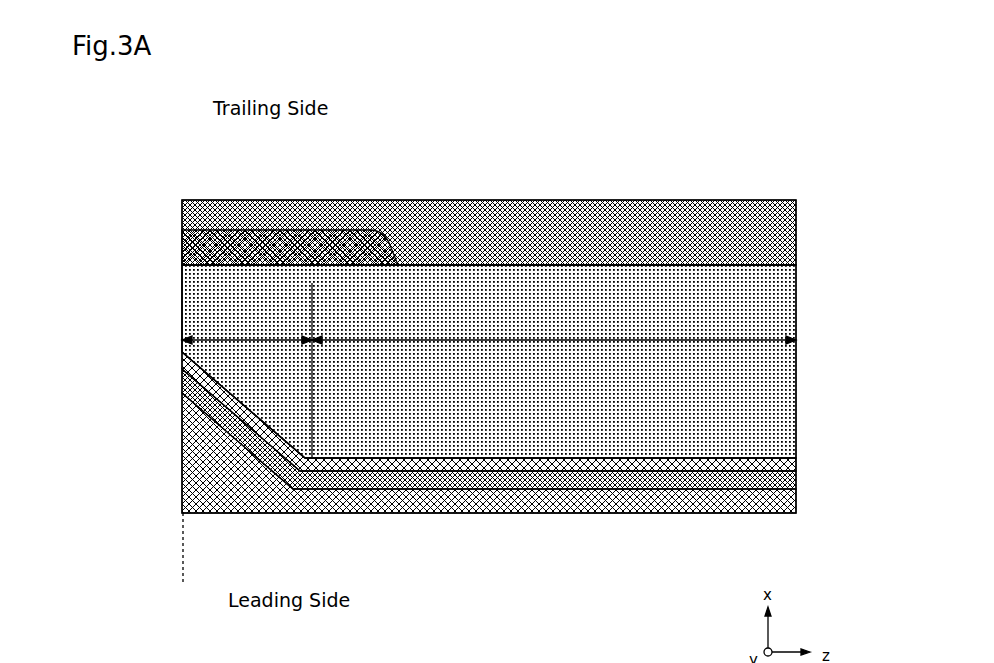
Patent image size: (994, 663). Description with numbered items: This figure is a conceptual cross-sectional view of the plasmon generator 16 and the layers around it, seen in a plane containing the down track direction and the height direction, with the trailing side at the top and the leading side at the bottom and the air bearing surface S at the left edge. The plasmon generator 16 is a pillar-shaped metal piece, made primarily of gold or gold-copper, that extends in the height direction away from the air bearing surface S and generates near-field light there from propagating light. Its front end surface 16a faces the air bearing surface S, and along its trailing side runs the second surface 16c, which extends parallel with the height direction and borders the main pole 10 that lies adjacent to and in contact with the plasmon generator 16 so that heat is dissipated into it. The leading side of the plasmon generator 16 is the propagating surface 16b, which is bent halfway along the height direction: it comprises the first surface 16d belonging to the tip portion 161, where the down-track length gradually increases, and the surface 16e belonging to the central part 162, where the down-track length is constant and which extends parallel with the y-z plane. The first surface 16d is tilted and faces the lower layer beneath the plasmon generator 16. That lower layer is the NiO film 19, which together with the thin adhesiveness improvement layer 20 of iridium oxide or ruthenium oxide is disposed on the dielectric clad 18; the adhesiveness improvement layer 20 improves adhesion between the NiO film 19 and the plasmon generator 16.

The main pole 10 is at (797, 222).
The clad 18 is at (181, 251).
The plasmon generator 16 is at (624, 281).
The front end surface 16a is at (182, 301).
The second surface 16c is at (430, 265).
The propagating surface 16b is at (489, 452).
The first surface 16d is at (272, 515).
The surface 16e is at (467, 513).
The NiO film 19 is at (797, 481).
The adhesiveness improvement layer 20 is at (797, 462).
The tip portion 161 is at (247, 330).
The central part 162 is at (554, 370).
The air bearing surface S is at (182, 560).